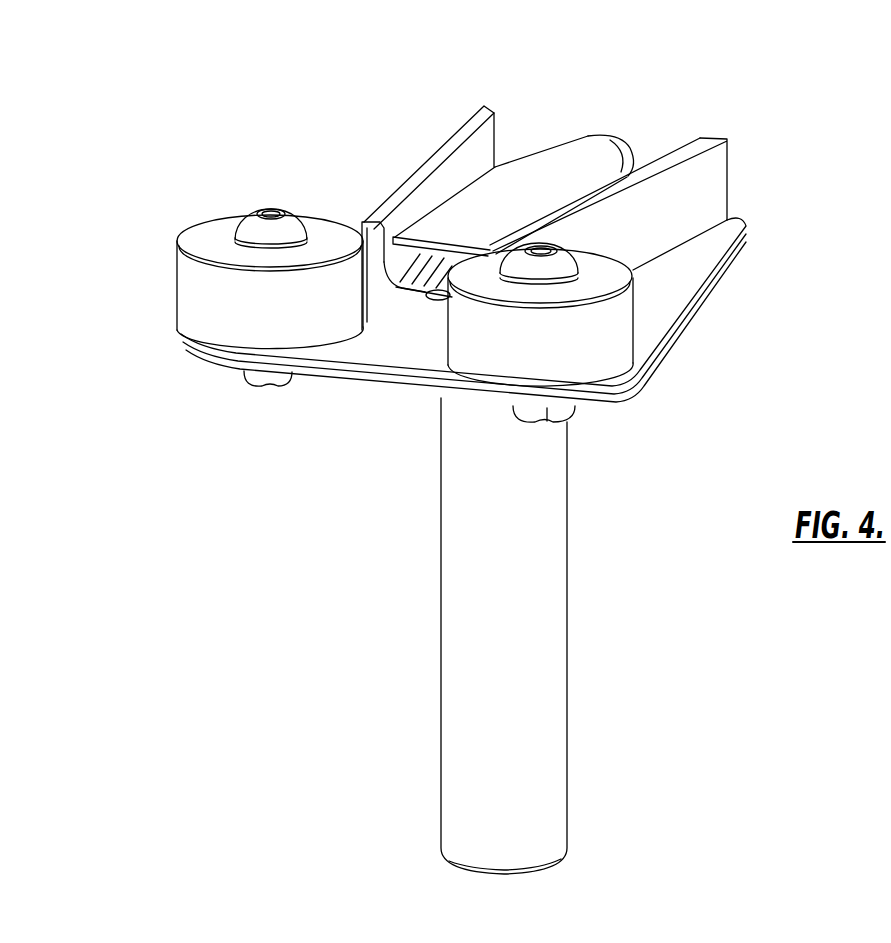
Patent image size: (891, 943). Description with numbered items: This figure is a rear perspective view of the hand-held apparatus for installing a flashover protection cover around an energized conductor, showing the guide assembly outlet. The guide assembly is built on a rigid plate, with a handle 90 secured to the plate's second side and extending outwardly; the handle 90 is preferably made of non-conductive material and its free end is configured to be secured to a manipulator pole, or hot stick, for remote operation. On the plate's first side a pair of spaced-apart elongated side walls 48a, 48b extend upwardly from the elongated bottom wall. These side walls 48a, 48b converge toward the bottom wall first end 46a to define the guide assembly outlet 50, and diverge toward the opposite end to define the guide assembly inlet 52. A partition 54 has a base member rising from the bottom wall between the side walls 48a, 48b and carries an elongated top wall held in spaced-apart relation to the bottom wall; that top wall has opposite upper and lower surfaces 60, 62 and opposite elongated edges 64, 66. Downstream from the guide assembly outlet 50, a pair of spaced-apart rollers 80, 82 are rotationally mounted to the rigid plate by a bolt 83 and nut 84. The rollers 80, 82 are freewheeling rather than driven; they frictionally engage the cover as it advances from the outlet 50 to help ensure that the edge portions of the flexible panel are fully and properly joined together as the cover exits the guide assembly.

The bottom wall first end 46a is at (440, 302).
The elongated side wall 48a is at (438, 155).
The elongated side wall 48b is at (693, 187).
The guide assembly outlet 50 is at (428, 312).
The guide assembly inlet 52 is at (497, 145).
The partition 54 is at (604, 137).
The upper surface 60 is at (515, 212).
The lower surface 62 is at (367, 222).
The elongated edge 64 is at (430, 212).
The elongated edge 66 is at (523, 214).
The roller 80 is at (607, 335).
The roller 82 is at (203, 303).
The bolt 83 is at (249, 230).
The nut 84 is at (243, 383).
The handle 90 is at (569, 730).